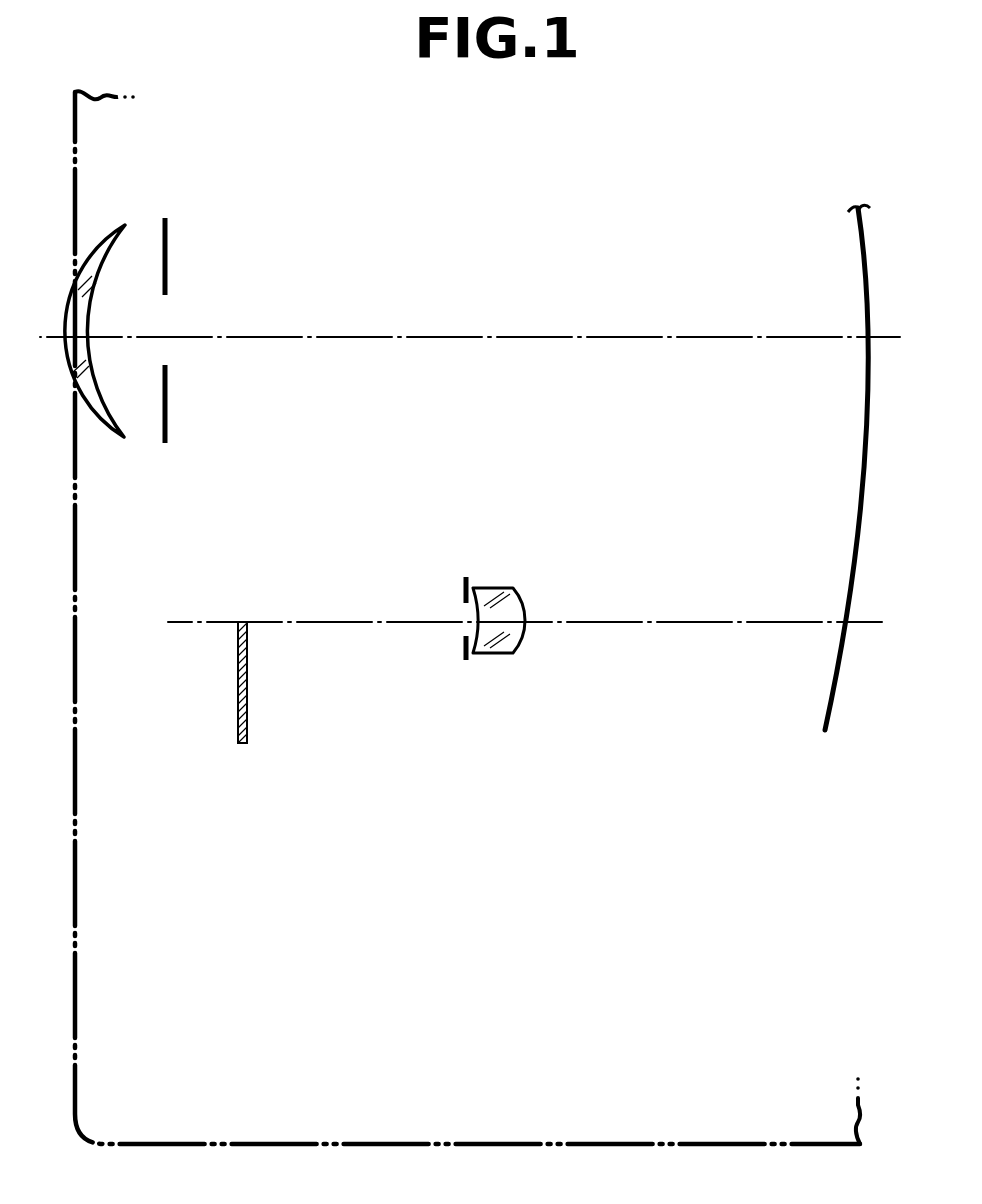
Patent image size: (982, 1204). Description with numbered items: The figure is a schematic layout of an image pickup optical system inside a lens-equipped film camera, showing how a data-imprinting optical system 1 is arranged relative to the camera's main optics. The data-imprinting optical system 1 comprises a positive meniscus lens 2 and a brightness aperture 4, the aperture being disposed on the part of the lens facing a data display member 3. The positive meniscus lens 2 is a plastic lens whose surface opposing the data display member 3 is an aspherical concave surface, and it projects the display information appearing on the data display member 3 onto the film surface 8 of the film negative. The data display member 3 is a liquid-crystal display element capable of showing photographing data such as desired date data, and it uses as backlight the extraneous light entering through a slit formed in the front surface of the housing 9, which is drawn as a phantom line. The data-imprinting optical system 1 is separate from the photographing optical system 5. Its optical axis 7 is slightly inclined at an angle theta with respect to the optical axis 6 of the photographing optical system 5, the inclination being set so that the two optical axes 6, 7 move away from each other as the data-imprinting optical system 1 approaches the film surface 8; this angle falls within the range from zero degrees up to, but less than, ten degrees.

The data-imprinting optical system 1 is at (466, 629).
The positive meniscus lens 2 is at (500, 590).
The data display member 3 is at (248, 714).
The brightness aperture 4 is at (463, 592).
The photographing optical system 5 is at (140, 212).
The optical axis 6 is at (535, 335).
The optical axis 7 is at (656, 620).
The film surface 8 is at (858, 504).
The housing 9 is at (488, 1146).